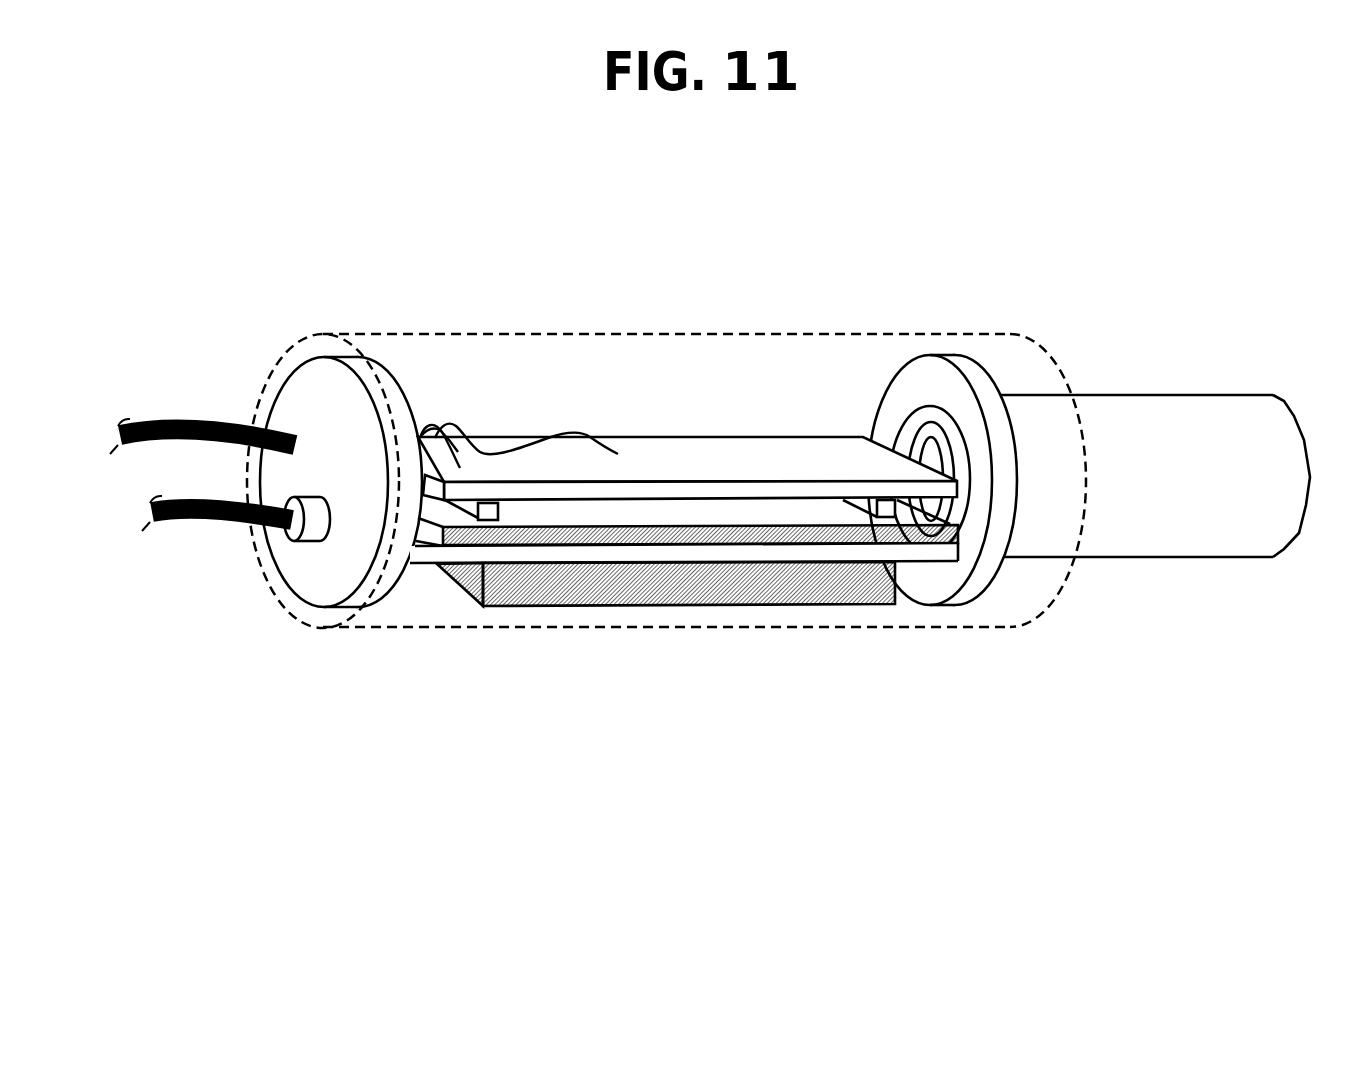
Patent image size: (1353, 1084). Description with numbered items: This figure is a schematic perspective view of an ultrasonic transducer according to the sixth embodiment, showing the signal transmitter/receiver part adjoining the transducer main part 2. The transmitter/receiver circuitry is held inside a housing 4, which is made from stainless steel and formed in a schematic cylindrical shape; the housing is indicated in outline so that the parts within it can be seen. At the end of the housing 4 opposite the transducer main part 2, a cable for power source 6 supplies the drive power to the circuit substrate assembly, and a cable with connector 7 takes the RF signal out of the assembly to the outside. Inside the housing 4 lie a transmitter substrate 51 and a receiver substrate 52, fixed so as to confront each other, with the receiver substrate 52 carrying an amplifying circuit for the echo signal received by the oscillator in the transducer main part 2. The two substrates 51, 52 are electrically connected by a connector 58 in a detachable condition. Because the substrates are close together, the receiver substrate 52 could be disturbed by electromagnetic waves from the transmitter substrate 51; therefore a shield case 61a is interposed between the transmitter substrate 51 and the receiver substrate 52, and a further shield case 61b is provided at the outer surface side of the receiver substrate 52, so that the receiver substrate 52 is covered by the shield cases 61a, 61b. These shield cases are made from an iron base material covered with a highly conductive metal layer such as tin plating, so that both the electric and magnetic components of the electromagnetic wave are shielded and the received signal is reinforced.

The transducer main part 2 is at (1150, 523).
The housing 4 is at (517, 378).
The cable for power source 6 is at (198, 425).
The cable with connector 7 is at (211, 532).
The transmitter substrate 51 is at (763, 457).
The receiver substrate 52 is at (738, 553).
The connector 58 is at (483, 507).
The shield case 61a is at (679, 535).
The shield case 61b is at (630, 602).